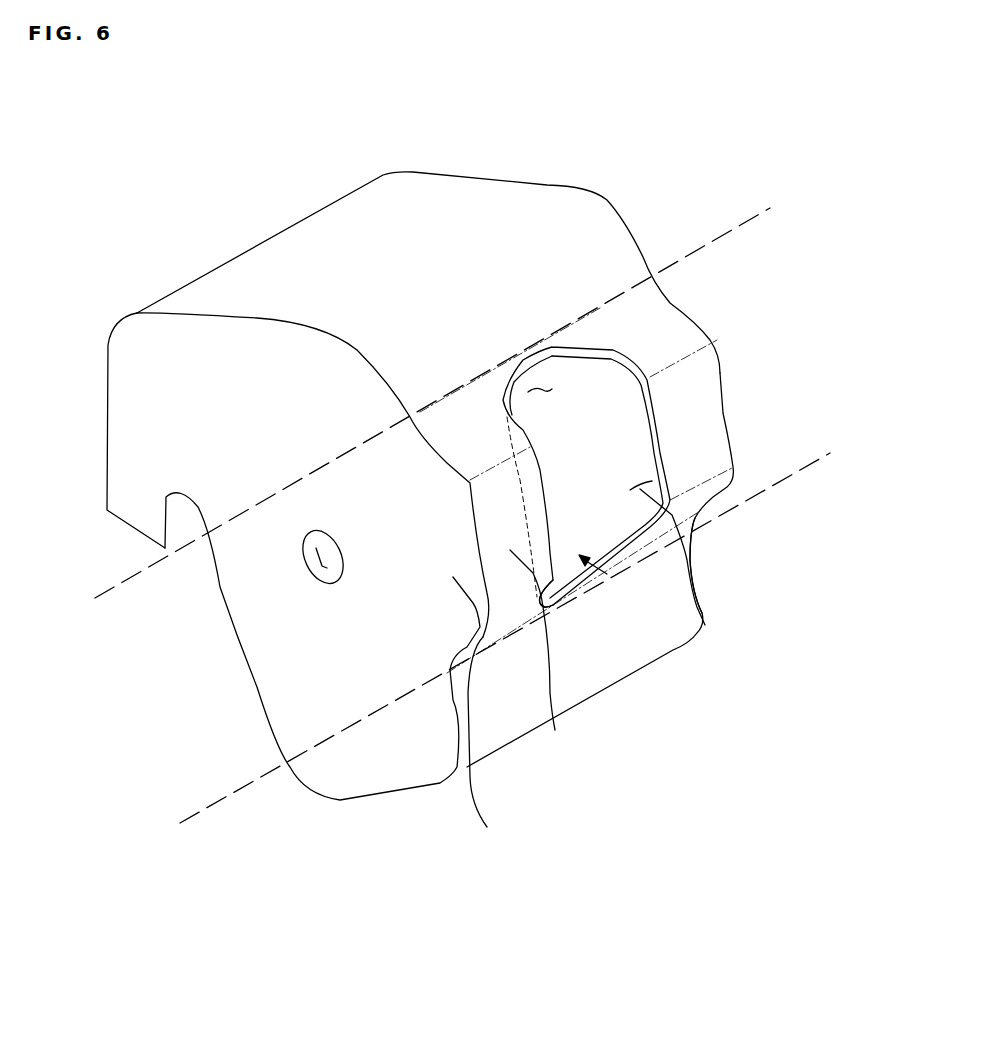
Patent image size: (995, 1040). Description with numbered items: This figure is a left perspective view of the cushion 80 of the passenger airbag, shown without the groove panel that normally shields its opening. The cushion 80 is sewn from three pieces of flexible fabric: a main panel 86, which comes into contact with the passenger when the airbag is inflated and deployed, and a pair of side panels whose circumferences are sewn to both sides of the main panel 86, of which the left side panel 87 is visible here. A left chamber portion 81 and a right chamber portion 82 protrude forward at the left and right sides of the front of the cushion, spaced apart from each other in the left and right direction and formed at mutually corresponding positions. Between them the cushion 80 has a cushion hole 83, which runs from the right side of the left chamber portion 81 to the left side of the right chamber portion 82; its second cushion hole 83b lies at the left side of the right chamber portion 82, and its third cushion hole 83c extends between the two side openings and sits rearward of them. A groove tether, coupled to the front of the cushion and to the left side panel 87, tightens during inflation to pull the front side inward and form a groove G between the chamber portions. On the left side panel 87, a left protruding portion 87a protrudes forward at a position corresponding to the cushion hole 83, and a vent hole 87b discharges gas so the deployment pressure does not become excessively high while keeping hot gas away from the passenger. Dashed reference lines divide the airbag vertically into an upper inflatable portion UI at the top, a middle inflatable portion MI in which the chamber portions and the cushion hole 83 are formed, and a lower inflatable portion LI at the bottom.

The cushion 80 is at (133, 172).
The main panel 86 is at (312, 258).
The right chamber portion 82 is at (687, 417).
The left side panel 87 is at (287, 667).
The left protruding portion 87a is at (487, 827).
The vent hole 87b is at (317, 562).
The cushion hole 83 is at (593, 560).
The second cushion hole 83b is at (705, 625).
The third cushion hole 83c is at (550, 583).
The left chamber portion 81 is at (555, 730).
The groove G is at (543, 390).
The upper inflatable portion UI is at (432, 396).
The middle inflatable portion MI is at (622, 412).
The lower inflatable portion LI is at (505, 638).